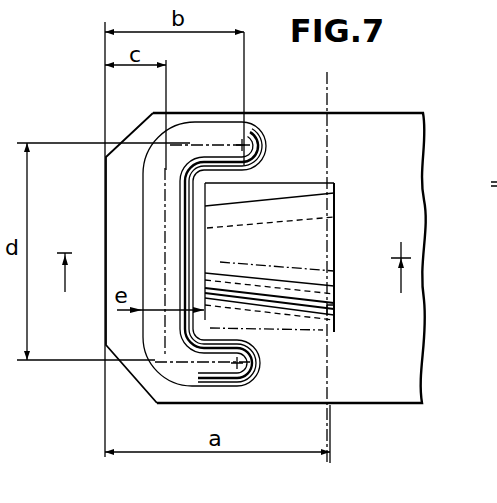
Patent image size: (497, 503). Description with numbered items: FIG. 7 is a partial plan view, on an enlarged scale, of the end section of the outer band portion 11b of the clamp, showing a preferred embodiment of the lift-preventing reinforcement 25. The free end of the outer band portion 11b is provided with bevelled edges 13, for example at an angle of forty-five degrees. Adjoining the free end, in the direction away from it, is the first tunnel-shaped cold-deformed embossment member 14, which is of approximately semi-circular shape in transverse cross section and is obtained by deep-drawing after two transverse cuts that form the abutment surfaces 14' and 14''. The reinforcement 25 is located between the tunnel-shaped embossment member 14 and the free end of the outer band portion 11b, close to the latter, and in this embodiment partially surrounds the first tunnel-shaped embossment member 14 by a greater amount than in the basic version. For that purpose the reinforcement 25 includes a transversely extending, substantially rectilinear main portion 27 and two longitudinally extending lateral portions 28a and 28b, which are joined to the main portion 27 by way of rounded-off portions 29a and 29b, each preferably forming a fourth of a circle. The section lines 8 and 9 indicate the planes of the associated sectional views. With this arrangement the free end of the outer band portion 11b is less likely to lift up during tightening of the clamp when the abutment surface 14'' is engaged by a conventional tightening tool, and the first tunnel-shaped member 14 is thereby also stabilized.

The section line 8- 8 is at (234, 278).
The section line 9- 9 is at (290, 83).
The outer band portion 11b is at (241, 271).
The bevelled edges 13 is at (126, 139).
The first tunnel-shaped embossment member 14 is at (298, 243).
The abutment surface 14' is at (256, 237).
The abutment surface 14'' is at (359, 257).
The reinforcement 25 is at (186, 258).
The main portion 27 is at (145, 203).
The lateral portion 28a is at (222, 136).
The lateral portion 28b is at (255, 386).
The rounded-off portion 29a is at (176, 146).
The rounded-off portion 29b is at (167, 352).